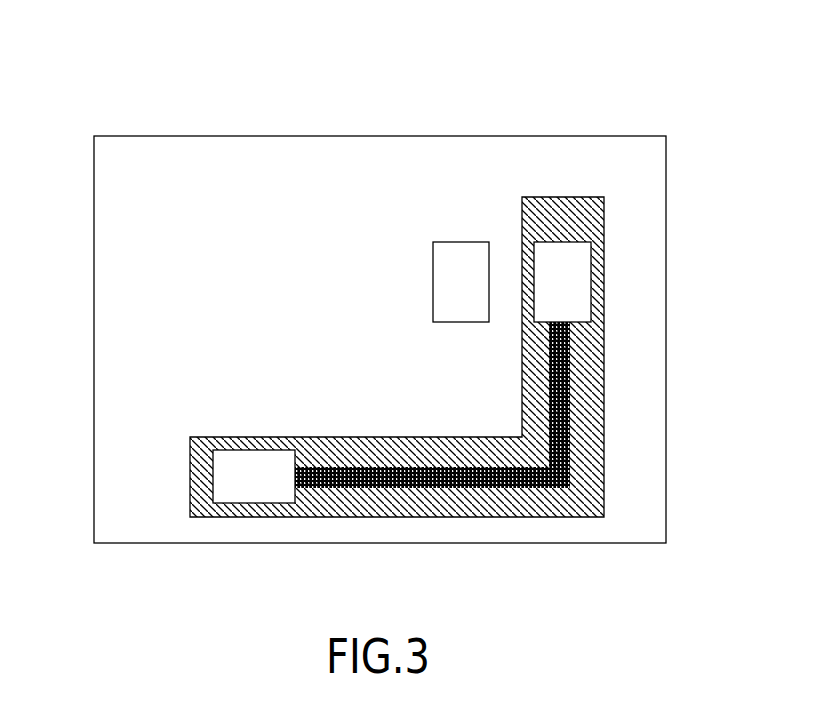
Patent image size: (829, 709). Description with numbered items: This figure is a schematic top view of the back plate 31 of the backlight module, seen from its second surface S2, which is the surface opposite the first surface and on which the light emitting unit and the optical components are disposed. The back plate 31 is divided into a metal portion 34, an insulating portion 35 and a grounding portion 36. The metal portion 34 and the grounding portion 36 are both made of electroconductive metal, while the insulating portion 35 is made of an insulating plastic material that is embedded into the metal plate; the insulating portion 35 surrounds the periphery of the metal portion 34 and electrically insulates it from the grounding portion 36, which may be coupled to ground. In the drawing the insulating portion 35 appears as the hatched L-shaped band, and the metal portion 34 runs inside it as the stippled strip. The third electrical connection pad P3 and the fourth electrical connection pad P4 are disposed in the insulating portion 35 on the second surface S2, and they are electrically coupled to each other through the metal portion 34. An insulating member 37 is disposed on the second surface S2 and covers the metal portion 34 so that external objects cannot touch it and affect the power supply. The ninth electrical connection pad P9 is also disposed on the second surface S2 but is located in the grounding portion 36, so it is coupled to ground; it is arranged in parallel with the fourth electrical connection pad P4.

The second surface S2 is at (394, 321).
The back plate 31 is at (420, 321).
The grounding portion 36 is at (428, 155).
The insulating portion 35 is at (360, 452).
The metal portion 34 is at (432, 405).
The insulating member 37 is at (455, 472).
The third electrical connection pad P3 is at (254, 476).
The fourth electrical connection pad P4 is at (562, 282).
The ninth electrical connection pad P9 is at (461, 282).